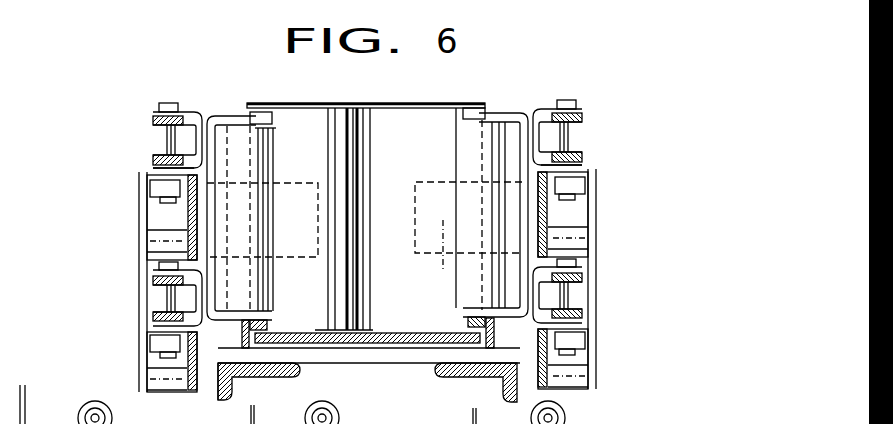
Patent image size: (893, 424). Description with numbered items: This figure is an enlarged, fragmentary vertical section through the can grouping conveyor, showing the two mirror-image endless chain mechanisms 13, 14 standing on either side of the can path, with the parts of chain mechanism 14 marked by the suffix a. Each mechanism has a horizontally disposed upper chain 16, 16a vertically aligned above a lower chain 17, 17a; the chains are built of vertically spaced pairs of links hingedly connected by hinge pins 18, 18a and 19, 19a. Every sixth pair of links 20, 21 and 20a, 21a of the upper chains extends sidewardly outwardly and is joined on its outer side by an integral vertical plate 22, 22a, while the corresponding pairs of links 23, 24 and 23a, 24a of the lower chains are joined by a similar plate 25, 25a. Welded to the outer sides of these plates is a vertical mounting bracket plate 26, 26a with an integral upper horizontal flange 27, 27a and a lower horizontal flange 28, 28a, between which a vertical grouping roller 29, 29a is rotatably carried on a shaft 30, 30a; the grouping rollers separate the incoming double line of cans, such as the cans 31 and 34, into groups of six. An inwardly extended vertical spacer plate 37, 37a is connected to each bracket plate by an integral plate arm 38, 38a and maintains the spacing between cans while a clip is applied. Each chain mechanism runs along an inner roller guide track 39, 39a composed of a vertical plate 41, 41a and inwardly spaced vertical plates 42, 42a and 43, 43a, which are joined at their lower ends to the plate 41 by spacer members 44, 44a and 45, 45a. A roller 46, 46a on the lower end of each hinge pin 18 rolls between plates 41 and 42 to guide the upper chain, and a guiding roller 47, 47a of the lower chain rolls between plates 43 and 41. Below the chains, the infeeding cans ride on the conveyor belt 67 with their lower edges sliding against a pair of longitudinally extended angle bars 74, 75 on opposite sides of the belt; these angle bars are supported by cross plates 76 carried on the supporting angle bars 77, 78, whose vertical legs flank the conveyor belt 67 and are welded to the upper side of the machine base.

The chain mechanism 13 is at (588, 114).
The chain mechanism 14 is at (150, 121).
The upper chain 16 is at (590, 154).
The upper chain 16a is at (150, 160).
The lower chain 17 is at (588, 286).
The lower chain 17a is at (160, 300).
The hinge pin 18 is at (565, 137).
The hinge pin 18a is at (166, 140).
The hinge pin 19 is at (563, 300).
The hinge pin 19a is at (160, 322).
The chain link 20 is at (588, 108).
The chain link 20a is at (191, 113).
The chain link 21 is at (583, 163).
The chain link 21a is at (150, 168).
The vertically disposed plate 22 is at (533, 140).
The vertically disposed plate 22a is at (198, 138).
The chain link 23 is at (580, 272).
The chain link 23a is at (157, 275).
The chain link 24 is at (580, 322).
The chain link 24a is at (164, 347).
The vertically disposed plate 25 is at (518, 296).
The vertically disposed plate 25a is at (208, 292).
The mounting bracket plate 26 is at (530, 165).
The mounting bracket plate 26a is at (207, 168).
The horizontal flange 27 is at (511, 112).
The horizontal flange 27a is at (259, 123).
The horizontal flange 28 is at (468, 312).
The horizontal flange 28a is at (268, 316).
The grouping roller 29 is at (468, 219).
The grouping roller 29a is at (269, 209).
The shaft 30 is at (482, 106).
The shaft 30a is at (254, 128).
The can 31 is at (326, 112).
The can 34 is at (400, 116).
The spacer plate 37 is at (434, 196).
The spacer plate 37a is at (313, 258).
The plate arm 38 is at (497, 230).
The plate arm 38a is at (210, 240).
The inner roller guide track 39 is at (601, 217).
The inner roller guide track 39a is at (136, 224).
The vertical plate 41 is at (589, 372).
The vertical plate 41a is at (145, 367).
The vertical plate 42 is at (546, 214).
The vertical plate 42a is at (190, 213).
The vertical plate 43 is at (548, 378).
The vertical plate 43a is at (203, 380).
The spacer member 44 is at (580, 233).
The spacer member 44a is at (158, 240).
The spacer member 45 is at (580, 379).
The spacer member 45a is at (167, 383).
The roller 46 is at (578, 191).
The roller 46a is at (152, 200).
The guiding roller 47 is at (578, 348).
The guiding roller 47a is at (243, 343).
The conveyor belt 67 is at (363, 341).
The angle bar 74 is at (298, 366).
The angle bar 75 is at (496, 331).
The cross plate 76 is at (420, 354).
The supporting angle bar 77 is at (233, 384).
The supporting angle bar 78 is at (514, 371).